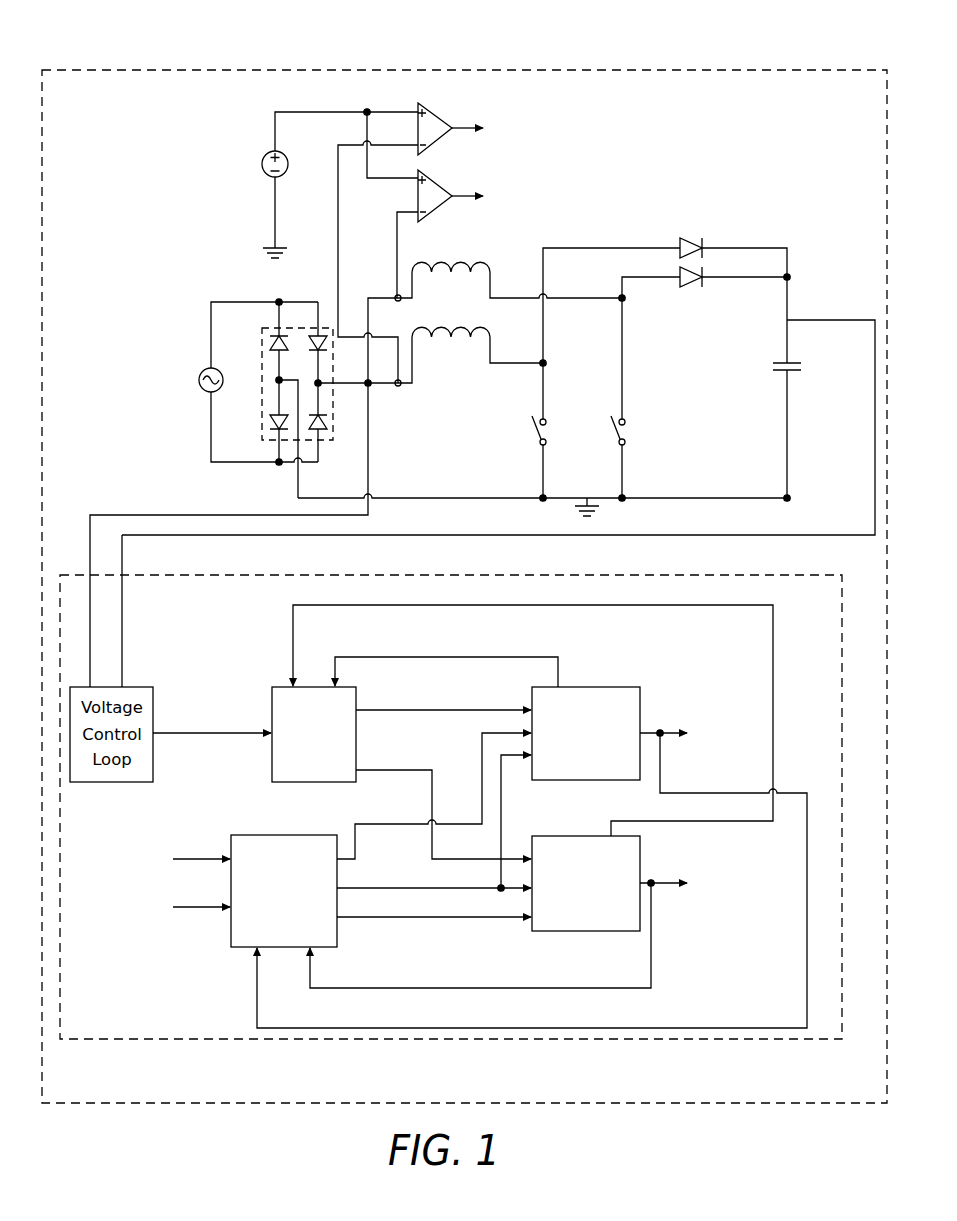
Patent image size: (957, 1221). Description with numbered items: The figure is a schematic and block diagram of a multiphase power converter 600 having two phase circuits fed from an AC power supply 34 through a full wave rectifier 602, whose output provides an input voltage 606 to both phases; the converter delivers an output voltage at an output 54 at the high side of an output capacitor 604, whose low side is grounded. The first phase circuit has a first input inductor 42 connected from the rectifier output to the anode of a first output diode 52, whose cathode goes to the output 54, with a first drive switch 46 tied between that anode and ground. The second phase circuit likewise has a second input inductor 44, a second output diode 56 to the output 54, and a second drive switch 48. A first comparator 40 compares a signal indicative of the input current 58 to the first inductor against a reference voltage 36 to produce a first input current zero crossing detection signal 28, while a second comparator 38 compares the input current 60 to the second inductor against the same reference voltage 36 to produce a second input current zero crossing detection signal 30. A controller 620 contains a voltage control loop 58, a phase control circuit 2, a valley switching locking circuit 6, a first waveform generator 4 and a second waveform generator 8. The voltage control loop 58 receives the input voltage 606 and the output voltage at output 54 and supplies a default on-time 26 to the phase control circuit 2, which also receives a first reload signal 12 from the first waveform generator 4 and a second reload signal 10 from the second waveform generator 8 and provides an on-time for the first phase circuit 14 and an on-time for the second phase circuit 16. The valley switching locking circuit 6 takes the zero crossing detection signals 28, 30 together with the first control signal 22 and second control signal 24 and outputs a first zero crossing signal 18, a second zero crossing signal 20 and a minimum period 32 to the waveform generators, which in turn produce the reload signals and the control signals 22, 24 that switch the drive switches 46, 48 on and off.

The multiphase power converter 600 is at (240, 68).
The reference voltage 36 is at (268, 153).
The second comparator 38 is at (437, 115).
The first comparator 40 is at (437, 183).
The input current / voltage control loop 58 is at (393, 294).
The first input inductor 42 is at (479, 257).
The second input inductor 44 is at (480, 324).
The input current 60 is at (400, 389).
The second drive switch 48 is at (536, 432).
The first drive switch 46 is at (616, 432).
The second output diode 56 is at (687, 237).
The first output diode 52 is at (689, 288).
The output capacitor 604 is at (779, 374).
The output 54 is at (813, 317).
The AC power supply 34 is at (205, 370).
The full wave rectifier 602 is at (268, 324).
The input voltage 606 is at (148, 511).
The controller 620 is at (716, 572).
The phase control circuit 2 is at (267, 699).
The default on-time 26 is at (246, 729).
The second reload signal 10 is at (290, 645).
The first reload signal 12 is at (363, 650).
The on-time for the first phase circuit 14 is at (514, 705).
The on-time for the second phase circuit 16 is at (363, 764).
The first zero crossing signal 18 is at (448, 820).
The first waveform generator 4 is at (589, 684).
The second waveform generator 8 is at (589, 833).
The first control signal 22 is at (661, 729).
The second control signal 24 is at (661, 879).
The valley switching locking circuit 6 is at (274, 832).
The first input current zero crossing detection signal 28 is at (206, 855).
The second input current zero crossing detection signal 30 is at (206, 912).
The minimum period 32 is at (491, 894).
The second zero crossing signal 20 is at (448, 923).